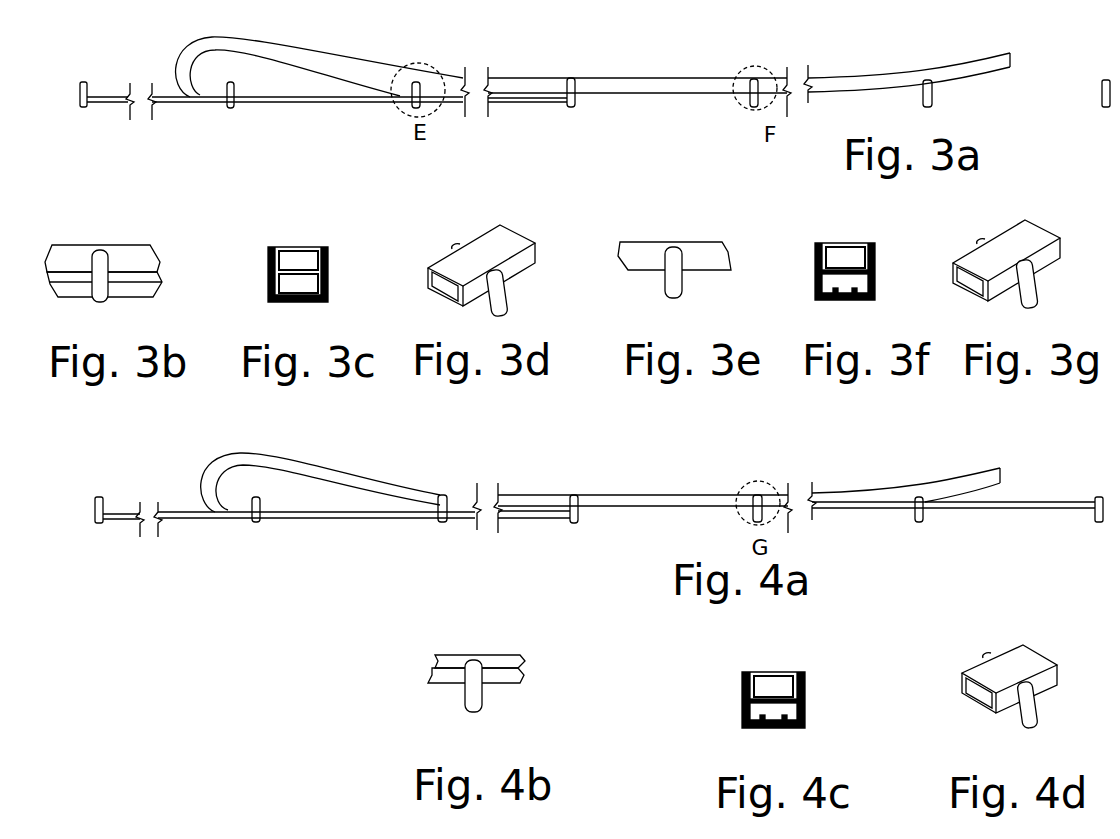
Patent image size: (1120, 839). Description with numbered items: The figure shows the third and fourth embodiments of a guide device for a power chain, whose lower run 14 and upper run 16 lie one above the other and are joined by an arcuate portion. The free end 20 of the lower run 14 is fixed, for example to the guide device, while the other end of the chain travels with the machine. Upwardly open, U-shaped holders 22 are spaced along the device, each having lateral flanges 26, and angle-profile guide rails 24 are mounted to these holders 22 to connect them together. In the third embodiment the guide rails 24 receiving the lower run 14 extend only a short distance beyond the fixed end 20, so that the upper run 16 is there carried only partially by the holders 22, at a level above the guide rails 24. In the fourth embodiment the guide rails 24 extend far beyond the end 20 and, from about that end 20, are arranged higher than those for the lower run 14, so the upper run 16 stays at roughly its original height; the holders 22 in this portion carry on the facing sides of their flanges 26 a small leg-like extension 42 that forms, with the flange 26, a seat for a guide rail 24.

In FIG. 3A, the lower run 14 is at (320, 99).
In FIG. 4A, the lower run 14 is at (283, 519).
In FIG. 3A, the upper run 16 is at (705, 80).
In FIG. 4A, the upper run 16 is at (306, 470).
In FIG. 4C, the upper run 16 is at (783, 672).
In FIG. 4D, the upper run 16 is at (1015, 653).
In FIG. 3A, the free end of the lower run 20 is at (538, 105).
In FIG. 4A, the free end of the lower run 20 is at (540, 518).
In FIG. 3A, the holder 22 is at (571, 108).
In FIG. 4A, the holder 22 is at (440, 523).
In FIG. 4B, the holder 22 is at (465, 697).
In FIG. 4C, the holder 22 is at (733, 731).
In FIG. 3A, the guide rail 24 is at (293, 104).
In FIG. 4A, the guide rail 24 is at (205, 520).
In FIG. 4B, the guide rail 24 is at (500, 676).
In FIG. 4C, the guide rail 24 is at (800, 690).
In FIG. 4D, the guide rail 24 is at (960, 690).
In FIG. 4C, the lateral flange 26 is at (746, 683).
In FIG. 4D, the lateral flange 26 is at (985, 660).
In FIG. 4C, the leg-like extension 42 is at (797, 713).